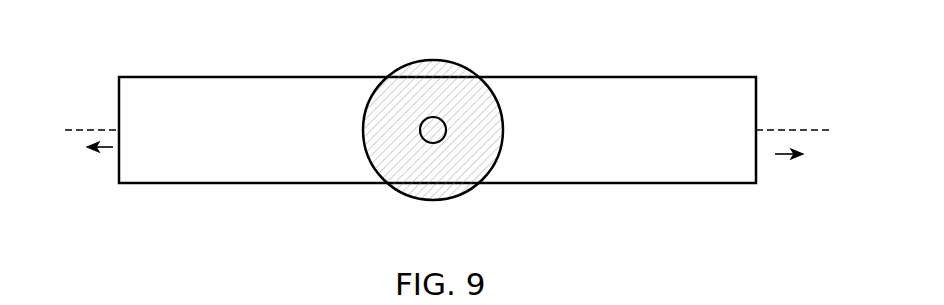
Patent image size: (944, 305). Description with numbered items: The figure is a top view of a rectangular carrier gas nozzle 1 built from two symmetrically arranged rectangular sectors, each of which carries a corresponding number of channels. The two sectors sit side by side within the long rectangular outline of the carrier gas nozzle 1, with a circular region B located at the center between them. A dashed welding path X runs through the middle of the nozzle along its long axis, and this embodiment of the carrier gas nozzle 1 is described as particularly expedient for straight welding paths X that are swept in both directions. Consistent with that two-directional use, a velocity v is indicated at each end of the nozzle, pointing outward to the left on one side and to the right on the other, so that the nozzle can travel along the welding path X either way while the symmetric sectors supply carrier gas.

The carrier gas nozzle 1 is at (448, 128).
The bearing / pivot B is at (433, 130).
The welding path X is at (95, 128).
The velocity v is at (442, 150).